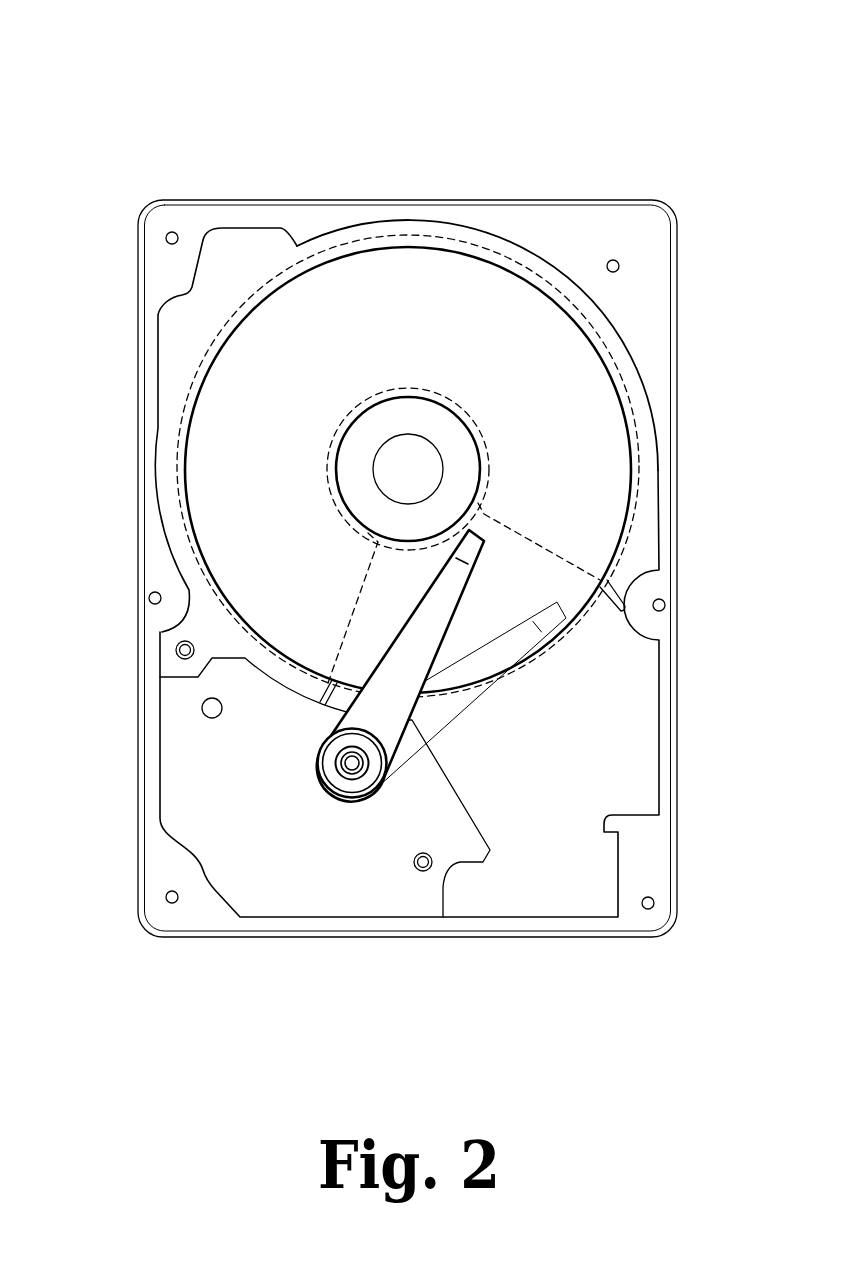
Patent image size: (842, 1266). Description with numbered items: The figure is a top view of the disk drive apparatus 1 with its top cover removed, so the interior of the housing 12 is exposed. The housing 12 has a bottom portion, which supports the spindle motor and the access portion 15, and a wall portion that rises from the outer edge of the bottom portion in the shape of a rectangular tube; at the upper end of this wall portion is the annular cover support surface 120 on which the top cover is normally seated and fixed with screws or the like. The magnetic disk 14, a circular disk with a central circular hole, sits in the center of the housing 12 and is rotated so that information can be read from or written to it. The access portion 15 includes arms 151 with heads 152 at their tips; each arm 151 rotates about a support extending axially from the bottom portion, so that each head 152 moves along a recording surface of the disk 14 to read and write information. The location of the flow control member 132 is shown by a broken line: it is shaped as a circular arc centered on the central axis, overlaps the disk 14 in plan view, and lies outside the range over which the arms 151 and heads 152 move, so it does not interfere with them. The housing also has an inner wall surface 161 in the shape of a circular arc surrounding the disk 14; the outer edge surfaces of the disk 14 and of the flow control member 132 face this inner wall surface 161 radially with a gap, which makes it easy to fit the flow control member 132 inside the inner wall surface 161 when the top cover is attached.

The disk drive apparatus 1 is at (233, 117).
The housing 12 is at (312, 948).
The cover support surface 120 is at (577, 233).
The flow control member 132 is at (440, 236).
The inner wall surface 161 is at (393, 217).
The magnetic disk 14 is at (543, 387).
The access portion 15 is at (413, 652).
The arm 151 is at (423, 638).
The head 152 is at (470, 548).